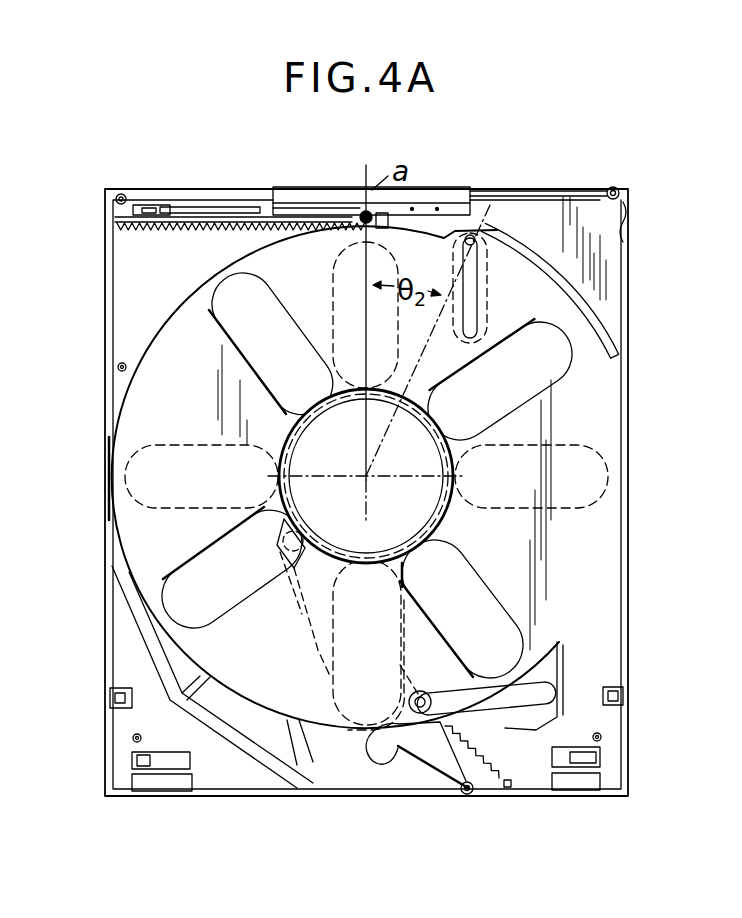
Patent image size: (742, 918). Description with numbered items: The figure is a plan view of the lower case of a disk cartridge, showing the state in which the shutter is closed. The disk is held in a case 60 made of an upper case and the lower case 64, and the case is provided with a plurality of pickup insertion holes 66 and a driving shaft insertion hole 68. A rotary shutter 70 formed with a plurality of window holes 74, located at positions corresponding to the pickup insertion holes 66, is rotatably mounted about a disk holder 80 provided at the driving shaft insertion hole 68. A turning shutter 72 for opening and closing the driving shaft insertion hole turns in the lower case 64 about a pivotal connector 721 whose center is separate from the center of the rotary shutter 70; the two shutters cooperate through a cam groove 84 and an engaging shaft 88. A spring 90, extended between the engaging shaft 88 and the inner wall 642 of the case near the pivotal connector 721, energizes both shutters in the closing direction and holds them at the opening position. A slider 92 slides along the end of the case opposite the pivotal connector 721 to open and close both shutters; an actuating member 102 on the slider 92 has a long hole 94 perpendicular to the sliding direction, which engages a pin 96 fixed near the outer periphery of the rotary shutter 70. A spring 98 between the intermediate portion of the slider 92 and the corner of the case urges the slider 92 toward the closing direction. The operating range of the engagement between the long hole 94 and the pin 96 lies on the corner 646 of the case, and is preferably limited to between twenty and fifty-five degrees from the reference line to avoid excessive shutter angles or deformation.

The case 60 is at (648, 200).
The lower case 64 is at (630, 286).
The corner of the case 646 is at (603, 275).
The spring 98 is at (205, 222).
The slider 92 is at (327, 200).
The pin 96 is at (475, 241).
The actuating member 102 is at (498, 288).
The rotary shutter 70 is at (112, 492).
The window holes 74 is at (208, 340).
The long hole 94 is at (497, 350).
The pickup insertion holes 66 is at (334, 292).
The disk holder 80 is at (450, 440).
The driving shaft insertion hole 68 is at (453, 522).
The turning shutter 72 is at (300, 612).
The engaging shaft 88 is at (421, 694).
The cam groove 84 is at (535, 689).
The spring 90 is at (490, 755).
The pivotal connector 721 is at (468, 794).
The inner wall 642 is at (511, 786).